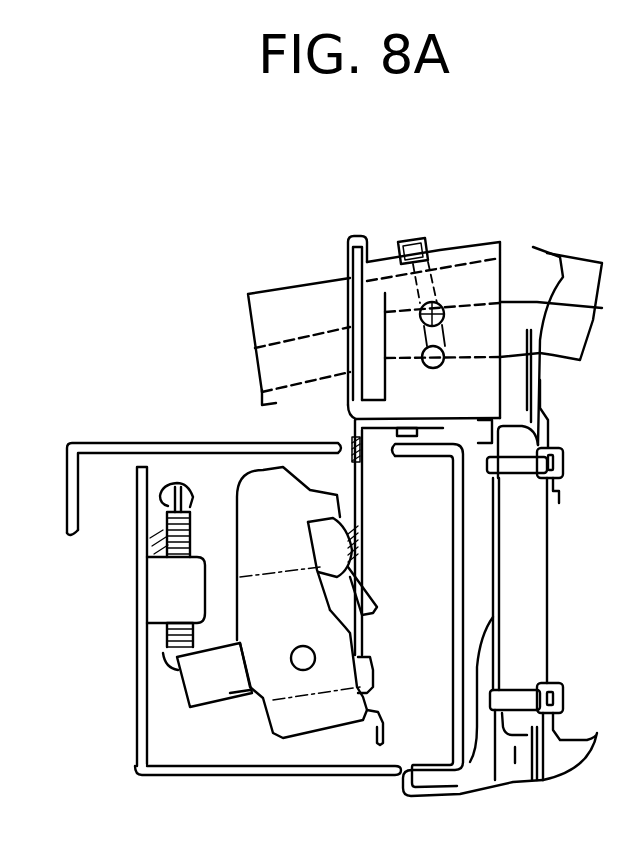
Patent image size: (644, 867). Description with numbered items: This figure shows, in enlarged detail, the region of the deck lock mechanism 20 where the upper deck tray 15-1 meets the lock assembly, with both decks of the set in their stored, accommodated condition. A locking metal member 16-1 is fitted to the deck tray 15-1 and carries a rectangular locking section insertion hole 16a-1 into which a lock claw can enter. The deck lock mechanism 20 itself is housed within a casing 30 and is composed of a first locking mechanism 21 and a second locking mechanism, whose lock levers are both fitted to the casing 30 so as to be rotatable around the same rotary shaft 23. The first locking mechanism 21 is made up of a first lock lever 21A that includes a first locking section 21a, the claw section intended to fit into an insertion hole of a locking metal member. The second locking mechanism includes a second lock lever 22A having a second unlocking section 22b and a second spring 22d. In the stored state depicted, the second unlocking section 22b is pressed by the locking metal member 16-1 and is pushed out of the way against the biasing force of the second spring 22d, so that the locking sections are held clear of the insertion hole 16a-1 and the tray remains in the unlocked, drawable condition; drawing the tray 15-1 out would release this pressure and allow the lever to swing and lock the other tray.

The deck tray 15-1 is at (470, 762).
The locking metal member 16-1 is at (350, 437).
The locking section insertion hole 16a-1 is at (258, 403).
The deck lock mechanism 20 is at (190, 730).
The first locking mechanism 21 is at (233, 474).
The first locking section 21a is at (283, 467).
The first lock lever 21A is at (298, 710).
The second lock lever 22A is at (225, 652).
The second unlocking section 22b is at (343, 550).
The second spring 22d is at (165, 540).
The rotary shaft 23 is at (297, 663).
The casing 30 is at (255, 782).